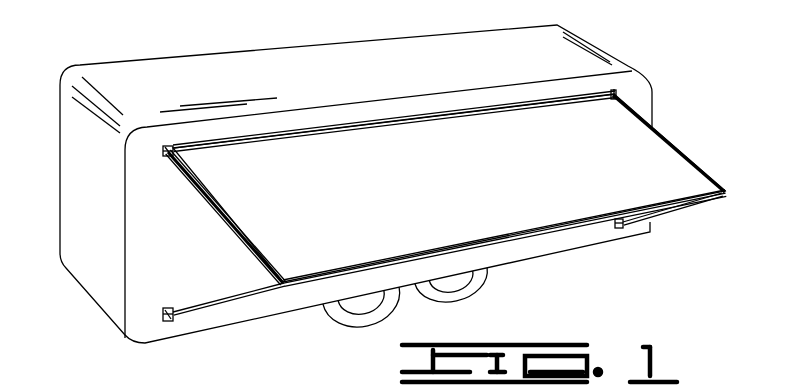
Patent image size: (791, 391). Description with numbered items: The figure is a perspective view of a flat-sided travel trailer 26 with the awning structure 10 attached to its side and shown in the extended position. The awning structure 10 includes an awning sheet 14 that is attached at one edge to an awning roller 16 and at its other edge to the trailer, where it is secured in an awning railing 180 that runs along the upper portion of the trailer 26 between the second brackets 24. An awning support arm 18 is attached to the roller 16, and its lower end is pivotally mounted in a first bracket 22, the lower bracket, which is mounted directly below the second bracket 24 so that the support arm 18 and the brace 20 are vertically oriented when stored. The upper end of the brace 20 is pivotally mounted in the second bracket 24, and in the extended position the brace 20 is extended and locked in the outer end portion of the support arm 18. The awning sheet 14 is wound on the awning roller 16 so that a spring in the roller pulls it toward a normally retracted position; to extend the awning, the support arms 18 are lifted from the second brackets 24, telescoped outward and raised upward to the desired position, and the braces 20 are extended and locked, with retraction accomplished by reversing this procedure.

The awning structure 10 is at (392, 212).
The awning sheet 14 is at (636, 160).
The awning roller 16 is at (728, 192).
The awning support arm 18 is at (240, 298).
The brace 20 is at (223, 226).
The first bracket 22 is at (167, 322).
The second bracket 24 is at (160, 153).
The travel trailer 26 is at (68, 53).
The awning railing 180 is at (320, 127).